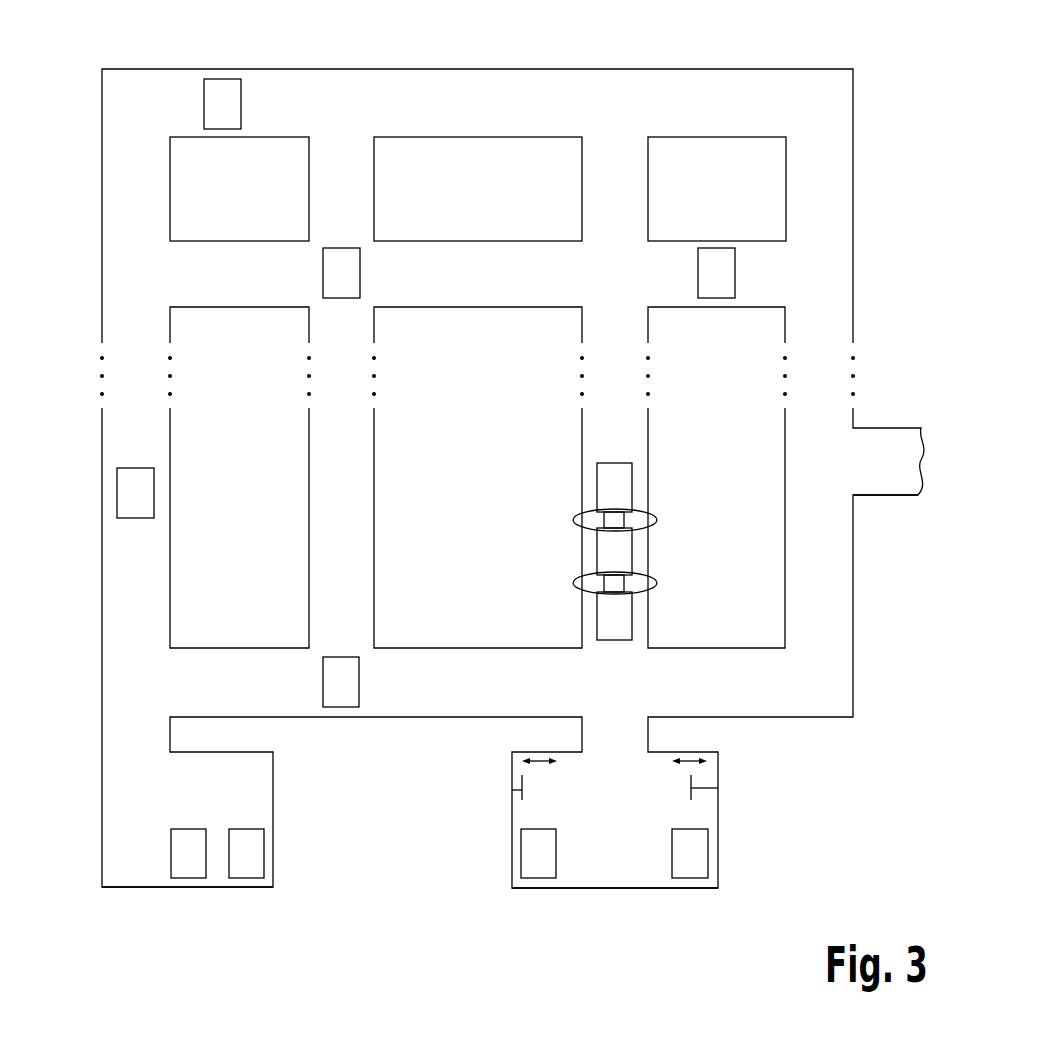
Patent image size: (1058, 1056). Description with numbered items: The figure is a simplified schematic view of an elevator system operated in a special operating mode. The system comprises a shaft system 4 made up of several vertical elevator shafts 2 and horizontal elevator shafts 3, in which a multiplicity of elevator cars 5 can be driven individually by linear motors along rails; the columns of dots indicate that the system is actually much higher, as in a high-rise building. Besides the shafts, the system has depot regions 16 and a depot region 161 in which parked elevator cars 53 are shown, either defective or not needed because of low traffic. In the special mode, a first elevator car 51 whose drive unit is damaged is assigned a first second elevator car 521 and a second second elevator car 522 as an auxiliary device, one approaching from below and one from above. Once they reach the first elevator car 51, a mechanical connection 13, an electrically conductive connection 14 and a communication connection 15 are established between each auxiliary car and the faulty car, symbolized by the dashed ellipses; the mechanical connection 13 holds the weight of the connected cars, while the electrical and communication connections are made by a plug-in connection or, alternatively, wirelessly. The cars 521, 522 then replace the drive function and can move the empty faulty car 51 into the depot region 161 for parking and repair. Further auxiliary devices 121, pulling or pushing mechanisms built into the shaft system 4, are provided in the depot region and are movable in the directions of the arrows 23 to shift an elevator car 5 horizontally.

The vertical elevator shaft 2 is at (607, 183).
The horizontal elevator shaft 3 is at (486, 85).
The shaft system 4 is at (850, 0).
The elevator car 5 is at (230, 118).
The mechanical connection 13 is at (573, 520).
The electrically conductive connection 14 is at (573, 520).
The communication connection 15 is at (573, 583).
The depot region 16 is at (887, 480).
The depot region 161 is at (613, 873).
The arrow 23 is at (540, 752).
The first elevator car 51 is at (632, 553).
The first second elevator car 521 is at (632, 615).
The second second elevator car 522 is at (632, 490).
The parked elevator car 53 is at (186, 878).
The further auxiliary device 121 is at (512, 790).